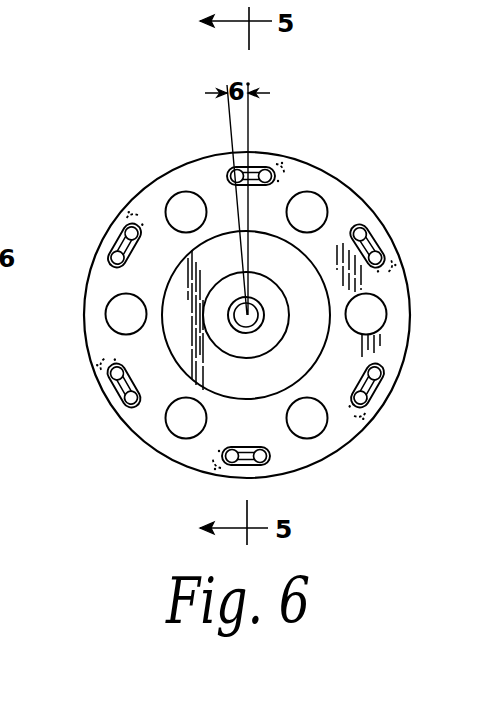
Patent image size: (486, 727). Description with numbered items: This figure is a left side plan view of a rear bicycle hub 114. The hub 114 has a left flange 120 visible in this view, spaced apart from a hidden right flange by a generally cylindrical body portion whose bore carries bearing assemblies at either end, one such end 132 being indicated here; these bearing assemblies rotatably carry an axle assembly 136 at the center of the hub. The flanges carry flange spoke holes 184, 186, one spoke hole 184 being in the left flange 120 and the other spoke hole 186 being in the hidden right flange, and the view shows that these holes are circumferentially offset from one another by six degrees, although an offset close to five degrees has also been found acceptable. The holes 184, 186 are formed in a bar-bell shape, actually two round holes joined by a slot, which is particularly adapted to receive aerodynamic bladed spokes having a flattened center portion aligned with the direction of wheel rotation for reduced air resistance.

The hub 114 is at (155, 450).
The left flange 120 is at (138, 196).
The end 132 is at (217, 343).
The axle assembly 136 is at (250, 313).
The flange spoke hole 184 is at (232, 170).
The flange spoke hole 186 is at (260, 168).